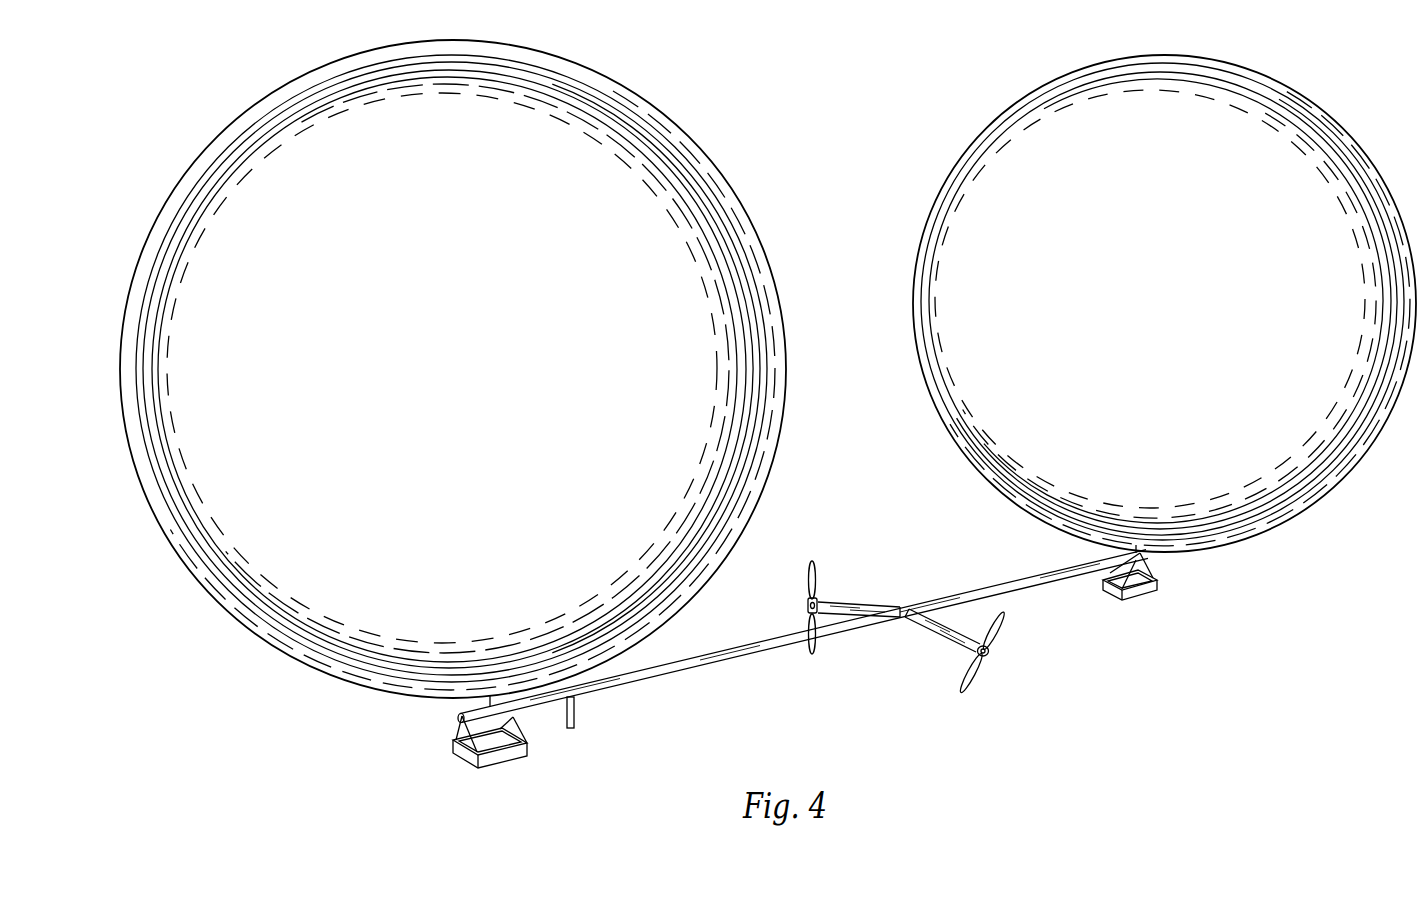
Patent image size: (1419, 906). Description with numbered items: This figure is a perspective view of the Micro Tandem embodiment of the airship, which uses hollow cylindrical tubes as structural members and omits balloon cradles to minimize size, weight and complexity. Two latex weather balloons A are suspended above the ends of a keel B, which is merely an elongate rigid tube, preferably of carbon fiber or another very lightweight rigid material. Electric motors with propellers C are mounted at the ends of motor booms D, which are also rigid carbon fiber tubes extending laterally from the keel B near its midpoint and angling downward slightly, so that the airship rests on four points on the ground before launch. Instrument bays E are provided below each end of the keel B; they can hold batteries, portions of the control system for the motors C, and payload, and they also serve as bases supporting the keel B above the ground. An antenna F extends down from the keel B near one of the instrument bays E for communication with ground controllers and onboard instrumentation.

The latex weather balloons A is at (712, 136).
The keel B is at (749, 666).
The electric motors with propellers C is at (803, 591).
The motor booms D is at (858, 595).
The instrument bays E is at (461, 762).
The antenna F is at (580, 713).